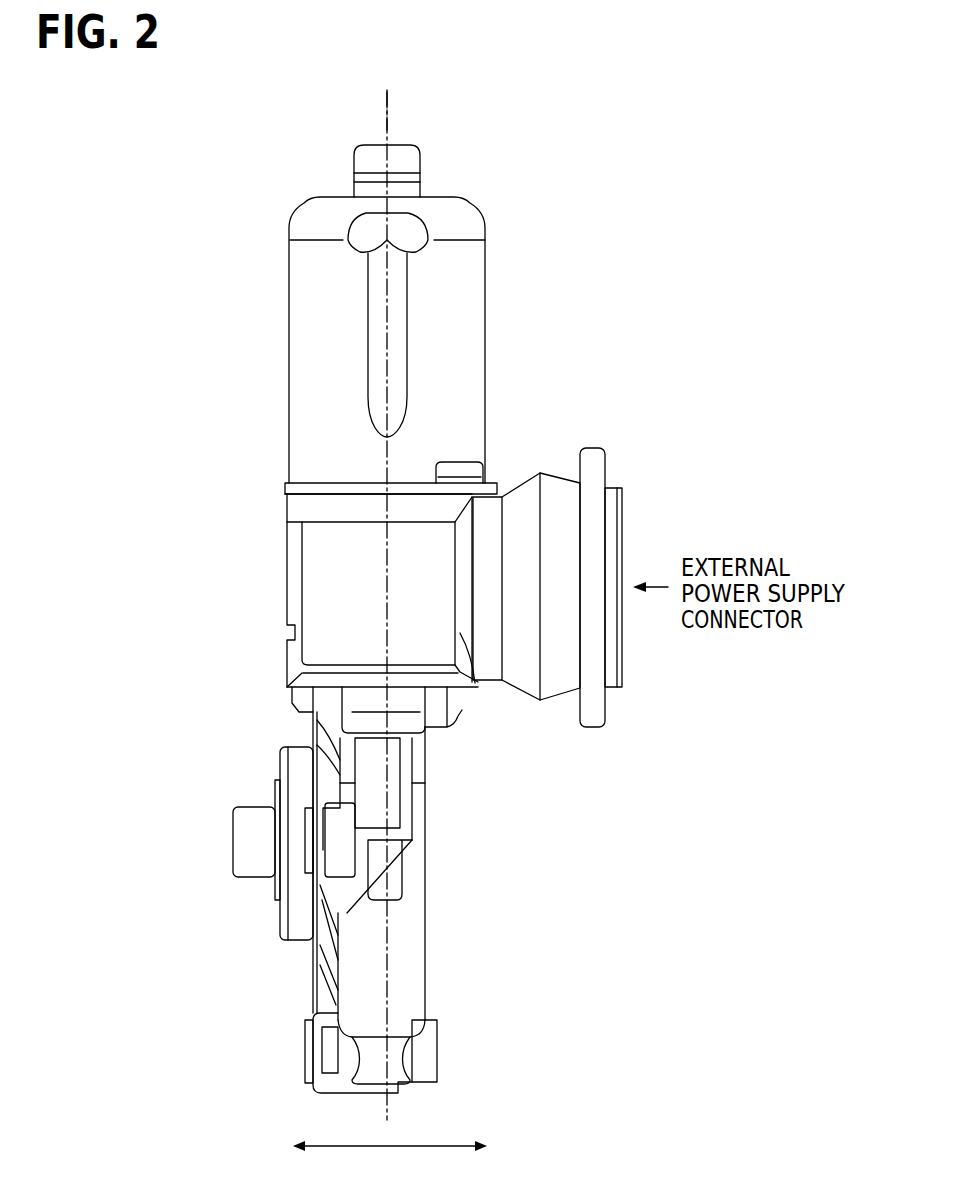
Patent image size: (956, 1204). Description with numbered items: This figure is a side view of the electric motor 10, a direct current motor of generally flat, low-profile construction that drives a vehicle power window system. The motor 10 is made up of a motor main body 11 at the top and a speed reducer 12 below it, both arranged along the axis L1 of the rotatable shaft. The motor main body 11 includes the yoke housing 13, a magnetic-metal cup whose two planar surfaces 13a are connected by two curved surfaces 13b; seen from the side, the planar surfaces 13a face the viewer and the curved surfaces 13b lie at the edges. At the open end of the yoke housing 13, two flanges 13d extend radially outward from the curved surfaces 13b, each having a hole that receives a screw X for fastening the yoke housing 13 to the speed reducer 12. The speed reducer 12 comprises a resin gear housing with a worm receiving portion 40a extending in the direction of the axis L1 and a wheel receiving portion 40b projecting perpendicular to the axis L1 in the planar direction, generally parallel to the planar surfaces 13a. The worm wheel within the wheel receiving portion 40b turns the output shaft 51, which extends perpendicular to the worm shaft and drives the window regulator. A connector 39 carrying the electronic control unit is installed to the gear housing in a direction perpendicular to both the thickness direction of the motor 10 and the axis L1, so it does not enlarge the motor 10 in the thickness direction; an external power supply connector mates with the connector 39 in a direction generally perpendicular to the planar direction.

The electric motor 10 is at (558, 210).
The motor main body 11 is at (278, 262).
The speed reducer 12 is at (264, 600).
The yoke housing 13 is at (312, 201).
The planar surfaces 13a is at (318, 336).
The curved surfaces 13b is at (425, 268).
The flanges 13d is at (324, 481).
The connector 39 is at (440, 652).
The worm receiving portion 40a is at (427, 983).
The wheel receiving portion 40b is at (312, 990).
The output shaft 51 is at (233, 853).
The axis L1 is at (388, 108).
The screw X is at (455, 461).